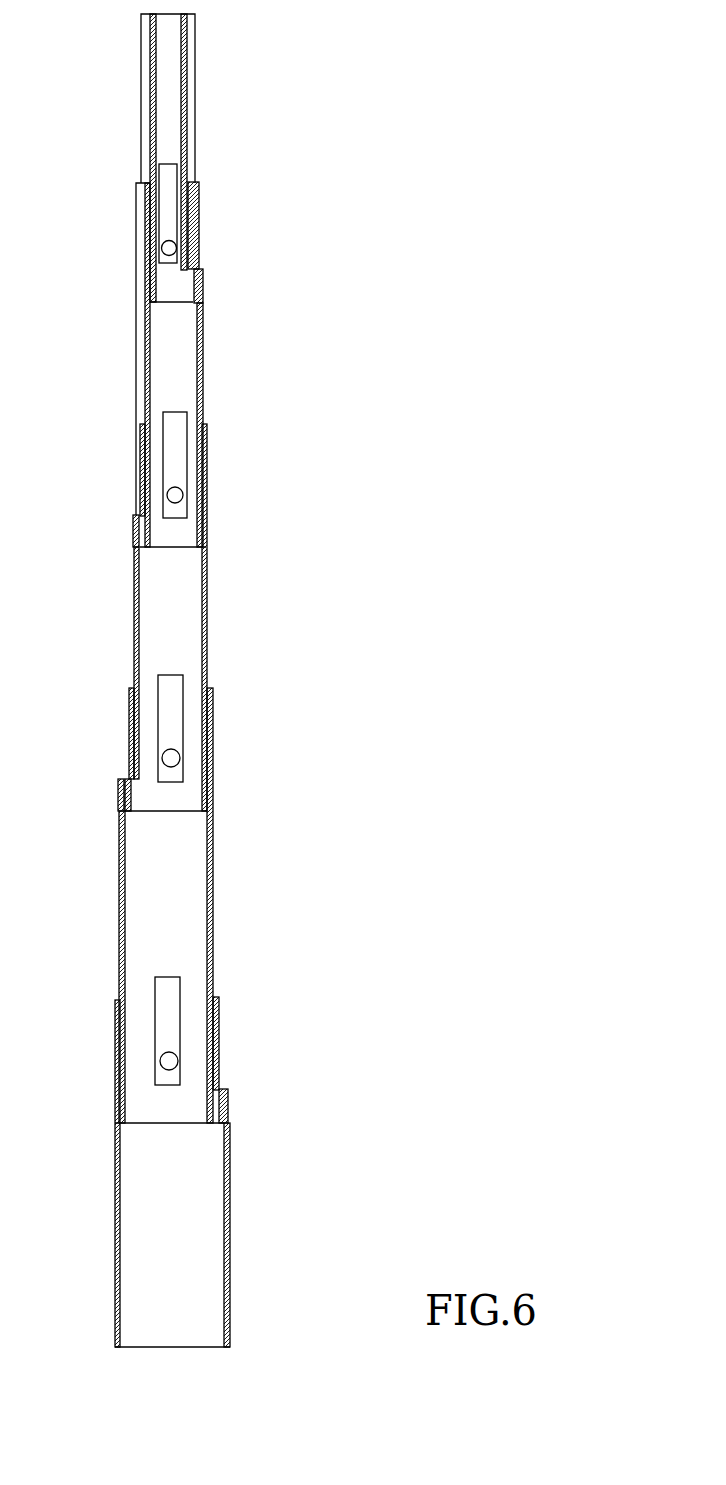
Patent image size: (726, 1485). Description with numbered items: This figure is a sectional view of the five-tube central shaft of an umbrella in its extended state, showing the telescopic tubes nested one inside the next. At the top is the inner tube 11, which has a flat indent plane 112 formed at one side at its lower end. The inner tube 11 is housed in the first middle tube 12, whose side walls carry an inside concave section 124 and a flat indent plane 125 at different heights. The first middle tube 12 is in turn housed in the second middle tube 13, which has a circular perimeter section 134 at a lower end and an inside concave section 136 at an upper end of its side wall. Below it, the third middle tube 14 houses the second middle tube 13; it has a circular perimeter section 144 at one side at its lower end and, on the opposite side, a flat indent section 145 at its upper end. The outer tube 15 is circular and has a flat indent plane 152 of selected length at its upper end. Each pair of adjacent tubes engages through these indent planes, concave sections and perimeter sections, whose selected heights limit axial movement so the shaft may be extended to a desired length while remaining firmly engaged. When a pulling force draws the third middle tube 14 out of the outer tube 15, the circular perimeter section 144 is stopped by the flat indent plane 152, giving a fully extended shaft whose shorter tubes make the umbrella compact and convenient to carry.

The inner tube 11 is at (188, 107).
The first middle tube 12 is at (205, 365).
The second middle tube 13 is at (208, 612).
The third middle tube 14 is at (213, 888).
The outer tube 15 is at (230, 1200).
The flat indent plane 112 is at (201, 283).
The inside concave section 124 is at (198, 215).
The flat indent plane 125 is at (134, 525).
The inside concave section 136 is at (138, 445).
The circular perimeter section 134 is at (119, 793).
The flat indent section 145 is at (130, 710).
The circular perimeter section 144 is at (228, 1105).
The flat indent plane 152 is at (220, 1052).